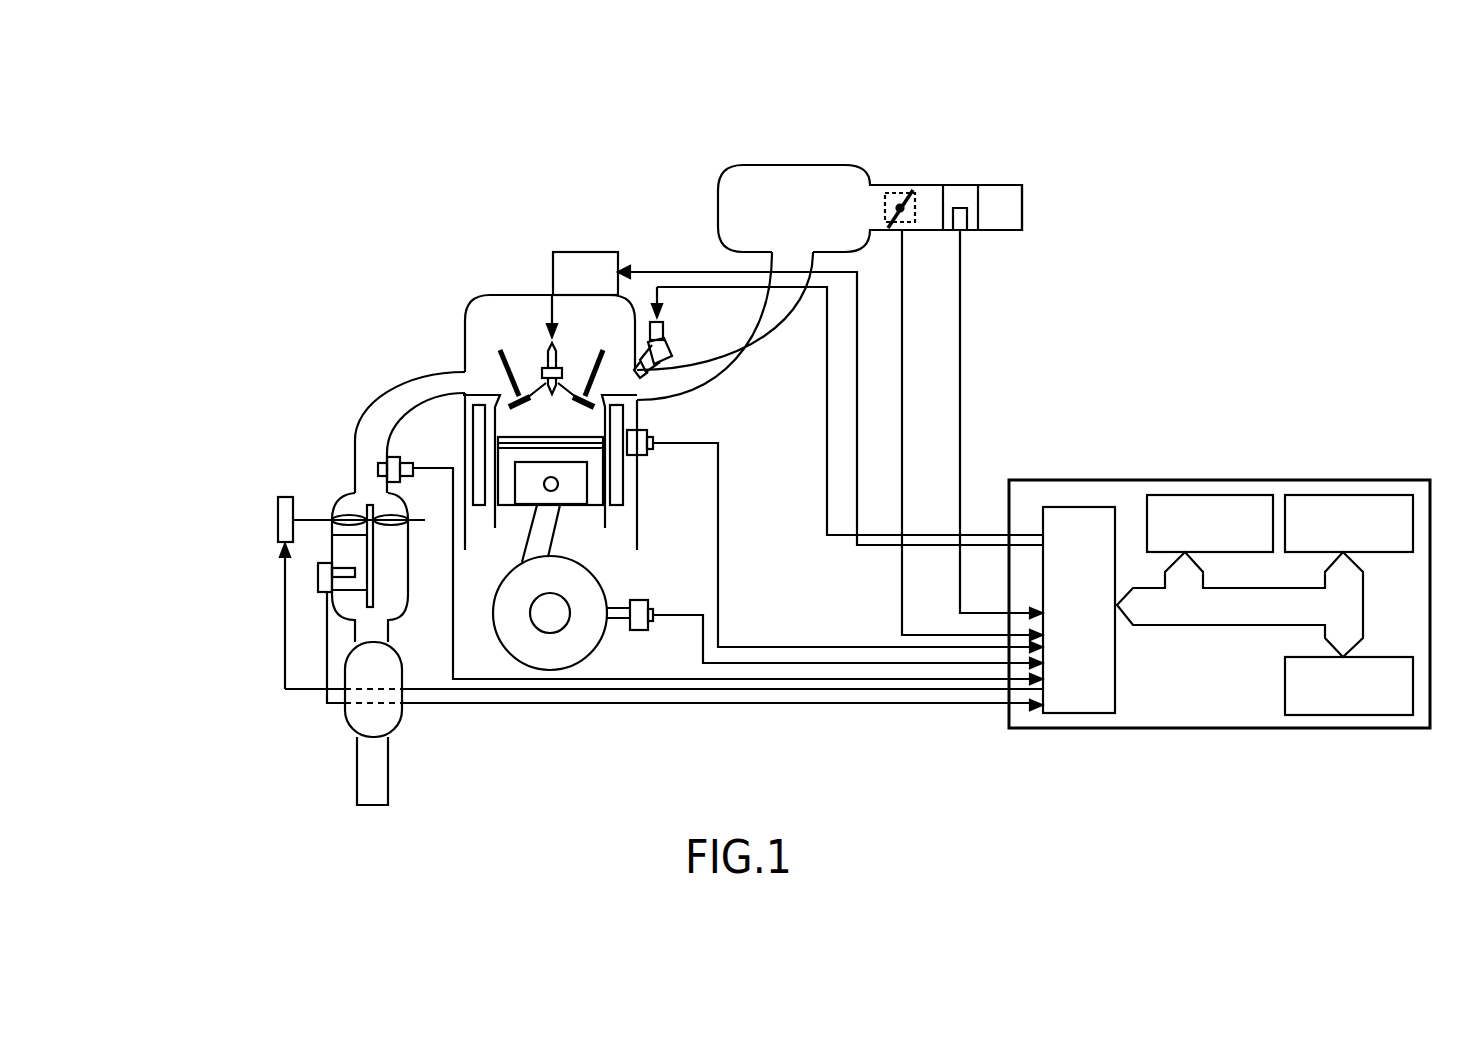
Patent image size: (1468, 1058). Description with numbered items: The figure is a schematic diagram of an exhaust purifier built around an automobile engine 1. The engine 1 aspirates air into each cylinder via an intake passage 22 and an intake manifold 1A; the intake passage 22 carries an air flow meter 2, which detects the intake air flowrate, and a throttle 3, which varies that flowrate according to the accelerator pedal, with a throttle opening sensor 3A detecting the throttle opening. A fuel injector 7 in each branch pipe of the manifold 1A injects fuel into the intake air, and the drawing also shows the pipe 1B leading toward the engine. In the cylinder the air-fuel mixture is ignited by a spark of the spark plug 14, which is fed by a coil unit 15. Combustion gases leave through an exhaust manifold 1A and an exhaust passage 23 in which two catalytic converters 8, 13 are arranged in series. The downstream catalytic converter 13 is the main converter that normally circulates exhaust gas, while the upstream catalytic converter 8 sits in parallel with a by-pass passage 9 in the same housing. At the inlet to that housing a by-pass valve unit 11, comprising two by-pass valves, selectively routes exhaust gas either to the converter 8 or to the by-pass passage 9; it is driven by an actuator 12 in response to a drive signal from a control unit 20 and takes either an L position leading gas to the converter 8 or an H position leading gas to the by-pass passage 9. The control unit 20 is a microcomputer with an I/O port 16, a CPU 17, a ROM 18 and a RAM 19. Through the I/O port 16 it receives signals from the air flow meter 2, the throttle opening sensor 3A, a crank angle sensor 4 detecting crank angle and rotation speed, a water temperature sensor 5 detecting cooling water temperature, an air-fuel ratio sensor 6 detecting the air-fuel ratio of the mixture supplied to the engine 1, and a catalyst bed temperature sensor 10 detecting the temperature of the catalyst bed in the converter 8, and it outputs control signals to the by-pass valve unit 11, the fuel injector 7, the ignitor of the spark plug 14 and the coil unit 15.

The engine 1 is at (515, 255).
The manifold 1A is at (398, 395).
The intake pipe 1B is at (737, 365).
The air flow meter 2 is at (962, 190).
The throttle 3 is at (900, 190).
The throttle opening sensor 3A is at (917, 210).
The crank angle sensor 4 is at (640, 600).
The water temperature sensor 5 is at (640, 458).
The air-fuel ratio sensor 6 is at (402, 460).
The fuel injector 7 is at (668, 340).
The upstream catalytic converter 8 is at (328, 548).
The by-pass passage 9 is at (397, 598).
The catalyst bed temperature sensor 10 is at (324, 594).
The by-pass valve unit 11 is at (340, 515).
The actuator 12 is at (283, 497).
The downstream catalytic converter 13 is at (400, 725).
The spark plug 14 is at (545, 360).
The coil unit 15 is at (573, 258).
The I/O port 16 is at (1072, 508).
The CPU 17 is at (1220, 495).
The ROM 18 is at (1350, 495).
The RAM 19 is at (1338, 715).
The control unit 20 is at (1135, 480).
The intake passage 22 is at (1000, 185).
The exhaust passage 23 is at (357, 766).